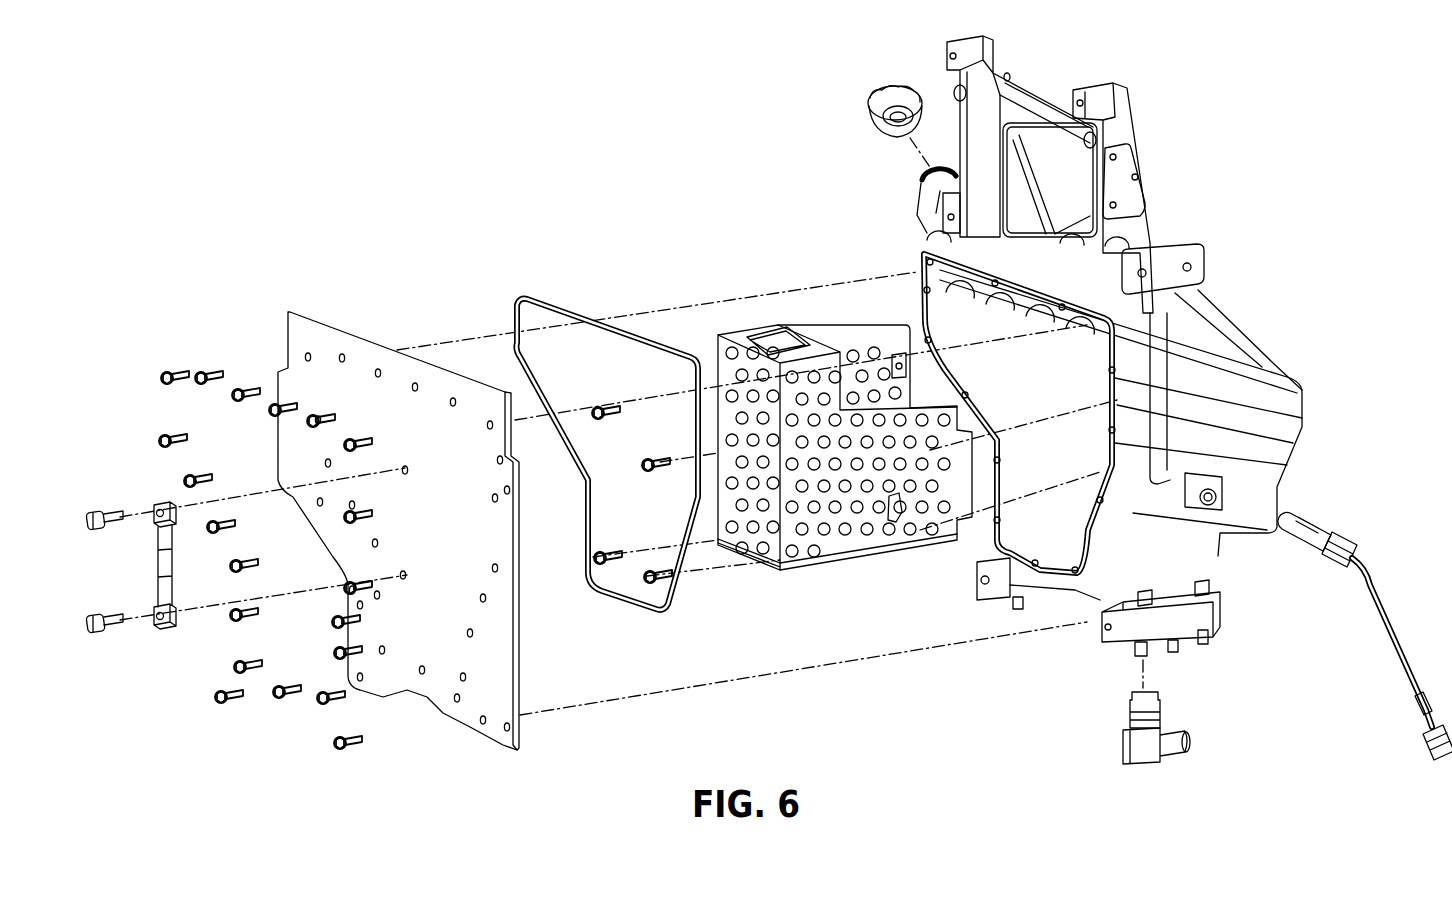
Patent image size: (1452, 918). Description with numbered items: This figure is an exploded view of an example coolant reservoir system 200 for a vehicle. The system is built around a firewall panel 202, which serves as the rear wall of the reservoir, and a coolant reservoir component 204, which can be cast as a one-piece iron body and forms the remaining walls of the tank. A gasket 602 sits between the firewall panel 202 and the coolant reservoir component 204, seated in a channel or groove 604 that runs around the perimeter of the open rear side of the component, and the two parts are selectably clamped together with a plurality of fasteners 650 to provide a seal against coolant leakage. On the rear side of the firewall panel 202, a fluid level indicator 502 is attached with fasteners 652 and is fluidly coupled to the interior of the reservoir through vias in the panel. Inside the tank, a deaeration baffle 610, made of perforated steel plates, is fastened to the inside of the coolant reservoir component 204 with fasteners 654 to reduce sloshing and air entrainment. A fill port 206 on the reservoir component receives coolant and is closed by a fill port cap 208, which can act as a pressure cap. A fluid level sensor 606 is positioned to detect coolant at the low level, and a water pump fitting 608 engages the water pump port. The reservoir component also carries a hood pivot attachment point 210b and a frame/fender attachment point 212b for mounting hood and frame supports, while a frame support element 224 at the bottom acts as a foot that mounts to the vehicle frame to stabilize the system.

The coolant reservoir system 200 is at (1305, 133).
The firewall panel 202 is at (290, 311).
The coolant reservoir component 204 is at (1196, 233).
The fill port 206 is at (920, 178).
The fill port cap 208 is at (868, 97).
The hood pivot attachment point 210b is at (1213, 268).
The frame/fender attachment point 212b is at (1147, 155).
The frame support element 224 is at (1112, 643).
The fluid level indicator 502 is at (157, 565).
The gasket 602 is at (630, 326).
The channel or groove 604 is at (917, 272).
The fluid level sensor 606 is at (1328, 523).
The water pump fitting 608 is at (1160, 766).
The deaeration baffle 610 is at (835, 574).
The fasteners 650 is at (205, 374).
The fasteners 652 is at (110, 633).
The fasteners 654 is at (662, 608).